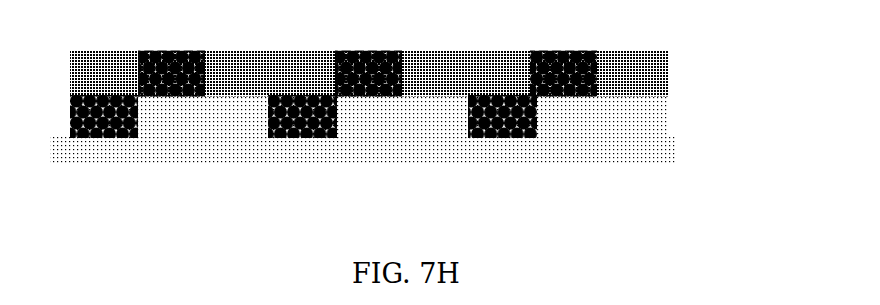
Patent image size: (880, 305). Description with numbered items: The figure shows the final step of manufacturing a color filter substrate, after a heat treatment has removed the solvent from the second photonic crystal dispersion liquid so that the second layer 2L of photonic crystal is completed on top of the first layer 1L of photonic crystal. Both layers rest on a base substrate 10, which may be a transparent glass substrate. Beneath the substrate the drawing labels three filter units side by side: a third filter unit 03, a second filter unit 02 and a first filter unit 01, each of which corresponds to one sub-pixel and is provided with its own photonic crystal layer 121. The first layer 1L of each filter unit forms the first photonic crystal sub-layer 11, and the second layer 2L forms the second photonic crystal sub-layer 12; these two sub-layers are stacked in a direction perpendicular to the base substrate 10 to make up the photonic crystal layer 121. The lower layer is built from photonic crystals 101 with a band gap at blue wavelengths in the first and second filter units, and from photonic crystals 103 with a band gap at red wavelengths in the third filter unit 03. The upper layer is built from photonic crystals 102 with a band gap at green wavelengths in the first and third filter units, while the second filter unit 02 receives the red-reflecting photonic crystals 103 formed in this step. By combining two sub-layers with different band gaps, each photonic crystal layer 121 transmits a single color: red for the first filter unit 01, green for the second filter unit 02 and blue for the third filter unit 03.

The base substrate 10 is at (667, 160).
The first photonic crystal sub-layer 11 is at (401, 118).
The second photonic crystal sub-layer 12 is at (405, 80).
The photonic crystal layer 121 is at (436, 111).
The photonic crystals with a photonic band gap at a wavelength band of blue light 101 is at (369, 116).
The photonic crystals with a photonic band gap at a wavelength band of green light 102 is at (369, 74).
The photonic crystals with a photonic band gap at a wavelength band of red light 103 is at (588, 55).
The first layer of photonic crystal 1L is at (52, 115).
The second layer of photonic crystal 2L is at (56, 78).
The first filter unit 01 is at (640, 182).
The second filter unit 02 is at (574, 184).
The third filter unit 03 is at (514, 184).